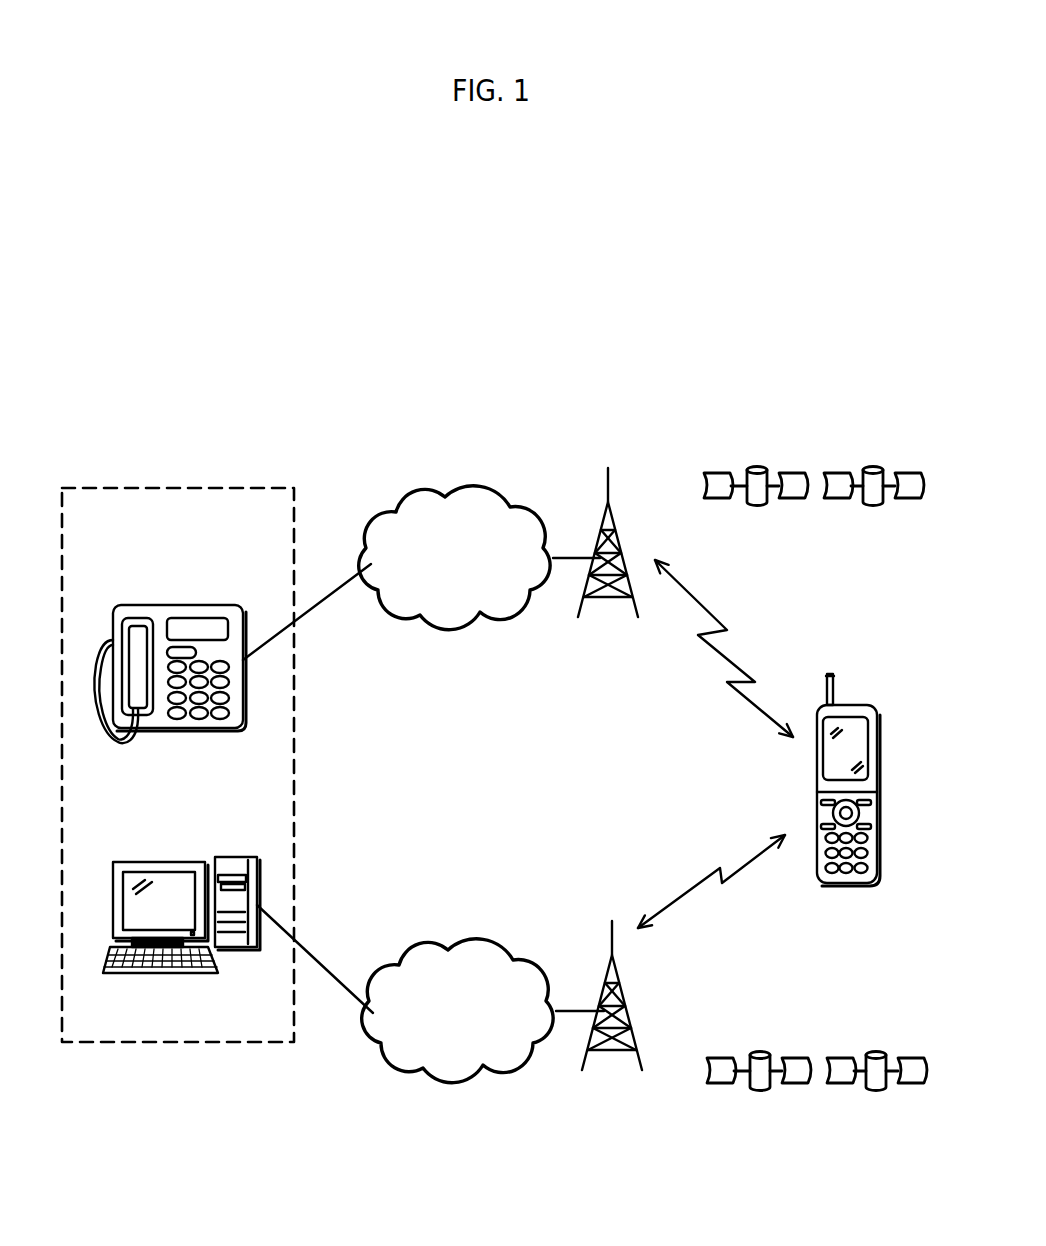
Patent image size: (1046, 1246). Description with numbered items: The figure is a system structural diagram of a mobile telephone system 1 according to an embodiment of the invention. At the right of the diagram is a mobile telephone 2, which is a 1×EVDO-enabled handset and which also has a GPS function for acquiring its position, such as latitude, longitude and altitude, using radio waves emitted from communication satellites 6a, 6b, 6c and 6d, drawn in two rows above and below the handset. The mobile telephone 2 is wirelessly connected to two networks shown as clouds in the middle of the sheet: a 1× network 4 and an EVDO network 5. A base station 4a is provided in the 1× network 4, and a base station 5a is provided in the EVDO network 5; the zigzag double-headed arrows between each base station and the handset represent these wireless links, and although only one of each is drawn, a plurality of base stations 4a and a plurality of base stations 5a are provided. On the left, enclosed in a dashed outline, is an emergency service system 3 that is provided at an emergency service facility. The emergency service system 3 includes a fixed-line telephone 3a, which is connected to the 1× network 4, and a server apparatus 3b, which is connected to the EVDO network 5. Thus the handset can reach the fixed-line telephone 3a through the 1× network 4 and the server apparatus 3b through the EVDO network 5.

The mobile telephone system 1 is at (703, 345).
The mobile telephone 2 is at (859, 702).
The emergency service system 3 is at (293, 489).
The fixed-line telephone 3a is at (180, 605).
The server apparatus 3b is at (180, 862).
The 1× network 4 is at (445, 492).
The base station 4a is at (617, 522).
The EVDO network 5 is at (448, 945).
The base station 5a is at (621, 998).
The communication satellite 6a is at (757, 467).
The communication satellite 6b is at (873, 467).
The communication satellite 6c is at (760, 1052).
The communication satellite 6d is at (876, 1052).